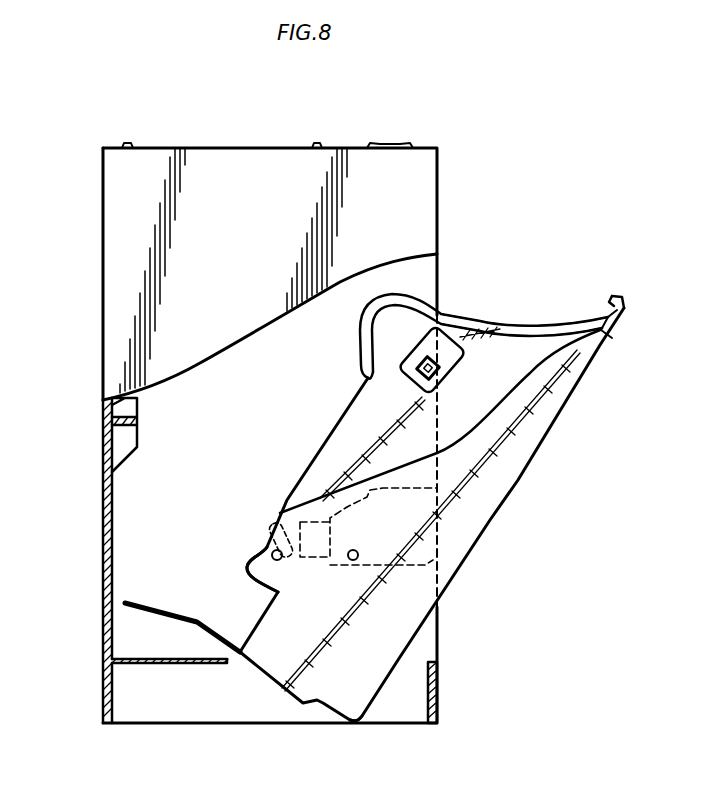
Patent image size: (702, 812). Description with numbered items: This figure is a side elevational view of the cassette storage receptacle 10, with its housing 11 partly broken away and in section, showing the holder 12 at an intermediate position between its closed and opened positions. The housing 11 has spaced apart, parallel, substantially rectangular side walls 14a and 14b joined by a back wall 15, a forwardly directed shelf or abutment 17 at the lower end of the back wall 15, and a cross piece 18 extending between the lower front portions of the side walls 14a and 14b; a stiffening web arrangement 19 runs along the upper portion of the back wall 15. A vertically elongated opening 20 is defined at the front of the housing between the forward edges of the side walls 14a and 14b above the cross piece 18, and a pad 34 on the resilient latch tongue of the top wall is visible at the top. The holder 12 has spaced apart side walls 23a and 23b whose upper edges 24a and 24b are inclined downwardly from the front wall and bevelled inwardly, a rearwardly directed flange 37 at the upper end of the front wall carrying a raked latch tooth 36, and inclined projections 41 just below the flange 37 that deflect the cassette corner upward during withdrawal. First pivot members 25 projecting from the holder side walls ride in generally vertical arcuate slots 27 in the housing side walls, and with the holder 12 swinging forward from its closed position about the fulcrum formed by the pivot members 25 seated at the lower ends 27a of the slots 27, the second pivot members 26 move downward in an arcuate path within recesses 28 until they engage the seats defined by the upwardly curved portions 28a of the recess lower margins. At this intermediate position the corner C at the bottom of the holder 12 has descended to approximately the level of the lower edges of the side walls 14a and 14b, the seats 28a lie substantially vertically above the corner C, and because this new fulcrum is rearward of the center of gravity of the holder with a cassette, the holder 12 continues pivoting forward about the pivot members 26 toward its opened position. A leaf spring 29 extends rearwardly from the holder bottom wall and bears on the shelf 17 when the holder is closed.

The cassette storage receptacle 10 is at (448, 156).
The housing 11 is at (103, 191).
The holder 12 is at (520, 474).
The side wall 14a is at (130, 248).
The side wall 14b is at (127, 532).
The back wall 15 is at (103, 483).
The shelf or abutment 17 is at (162, 665).
The cross piece 18 is at (440, 673).
The stiffening web arrangement 19 is at (127, 402).
The opening 20 is at (425, 285).
The side wall 23a is at (413, 600).
The side wall 23b is at (530, 345).
The upper edge 24a is at (463, 432).
The upper edge 24b is at (482, 312).
The first pivot member 25 is at (272, 554).
The second pivot member 26 is at (358, 551).
The arcuate slot 27 is at (270, 530).
The lower end of slot 27a is at (268, 566).
The recess 28 is at (433, 564).
The upwardly curved portion 28a is at (332, 563).
The leaf spring 29 is at (168, 613).
The pad 34 is at (385, 145).
The latch element 36 is at (612, 300).
The flange 37 is at (620, 297).
The inclined projection 41 is at (608, 325).
The corner C is at (357, 724).